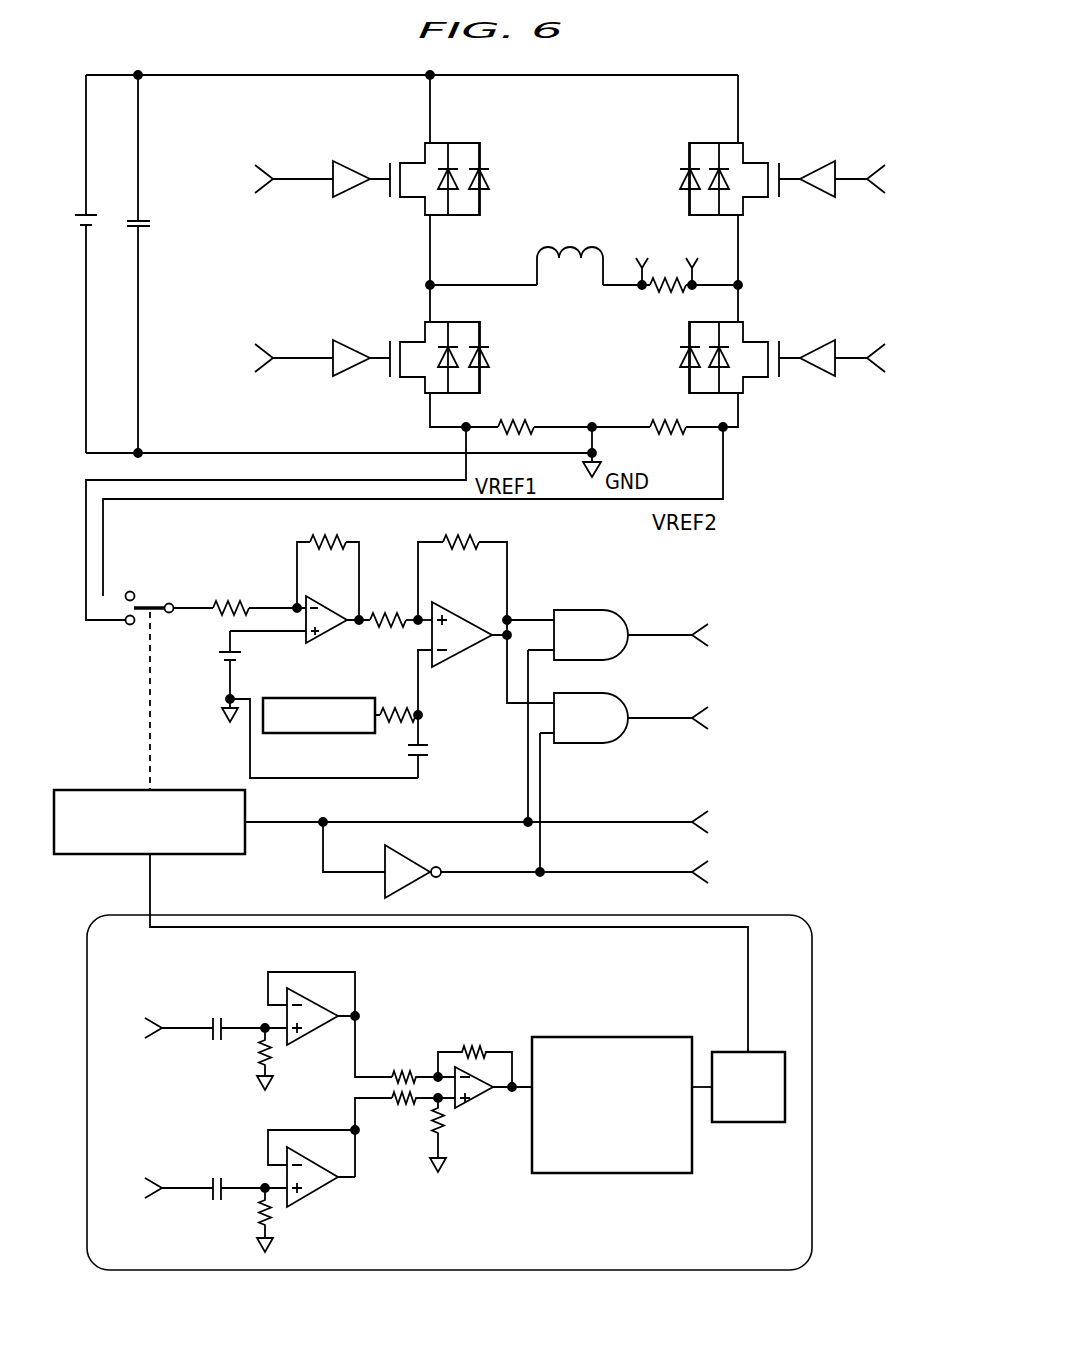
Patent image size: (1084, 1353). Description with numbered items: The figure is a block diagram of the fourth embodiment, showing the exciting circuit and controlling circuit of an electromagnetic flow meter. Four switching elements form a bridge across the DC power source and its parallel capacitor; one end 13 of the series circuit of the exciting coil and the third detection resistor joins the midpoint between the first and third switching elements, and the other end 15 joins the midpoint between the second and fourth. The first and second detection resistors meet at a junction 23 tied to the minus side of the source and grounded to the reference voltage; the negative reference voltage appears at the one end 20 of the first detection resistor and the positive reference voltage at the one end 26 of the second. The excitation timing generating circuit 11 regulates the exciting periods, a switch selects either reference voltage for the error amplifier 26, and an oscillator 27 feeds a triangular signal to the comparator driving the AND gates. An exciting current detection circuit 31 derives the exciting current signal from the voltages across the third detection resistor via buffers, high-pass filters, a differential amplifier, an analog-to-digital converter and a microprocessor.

The excitation timing generating circuit 11 is at (112, 856).
The one end of the series circuit of the exciting coil and third detection resistor 13 is at (432, 285).
The other end of the series circuit of the exciting coil and third detection resisto 15 is at (740, 285).
The one end of the first detection resistor 20 is at (463, 429).
The ground node 23 is at (593, 424).
The error amplifier 26 is at (726, 431).
The oscillator 27 is at (312, 737).
The exciting current detection circuit 31 is at (763, 915).